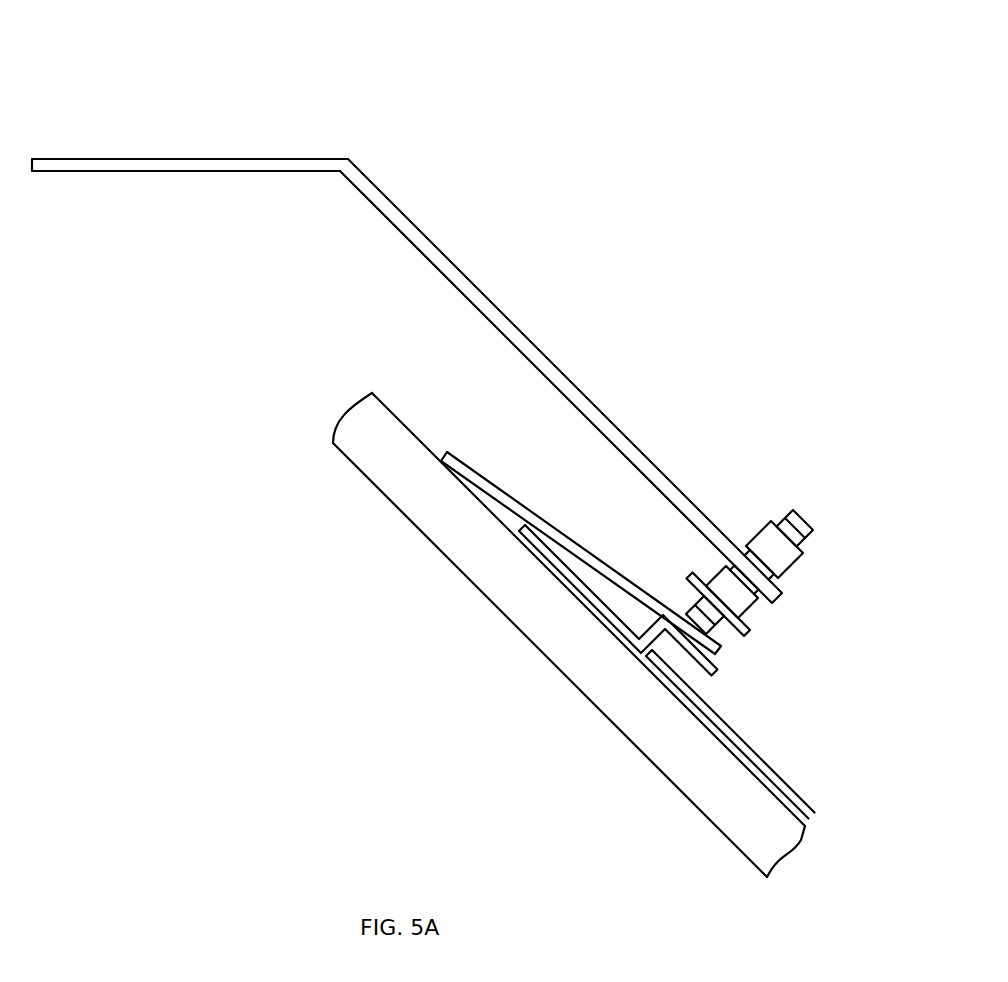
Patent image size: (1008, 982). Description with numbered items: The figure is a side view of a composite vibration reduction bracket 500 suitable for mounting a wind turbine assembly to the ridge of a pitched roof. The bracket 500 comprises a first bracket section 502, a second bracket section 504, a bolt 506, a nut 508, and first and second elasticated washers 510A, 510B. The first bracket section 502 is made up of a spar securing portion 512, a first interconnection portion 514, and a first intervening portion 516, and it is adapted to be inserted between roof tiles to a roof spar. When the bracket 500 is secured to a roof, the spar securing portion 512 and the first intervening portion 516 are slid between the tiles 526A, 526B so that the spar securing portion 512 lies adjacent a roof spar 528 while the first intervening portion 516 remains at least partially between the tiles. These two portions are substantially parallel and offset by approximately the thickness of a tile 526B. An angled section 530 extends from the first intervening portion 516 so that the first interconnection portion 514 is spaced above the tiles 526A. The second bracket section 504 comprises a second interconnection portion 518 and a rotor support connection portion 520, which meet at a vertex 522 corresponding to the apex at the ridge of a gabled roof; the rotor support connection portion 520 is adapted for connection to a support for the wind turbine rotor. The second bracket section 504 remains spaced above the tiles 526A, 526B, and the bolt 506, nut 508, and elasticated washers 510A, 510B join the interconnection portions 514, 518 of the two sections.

The composite vibration reduction bracket 500 is at (580, 86).
The first bracket section 502 is at (752, 704).
The second bracket section 504 is at (521, 211).
The bolt 506 is at (727, 630).
The nut 508 is at (794, 521).
The first elasticated washer 510A is at (757, 603).
The second elasticated washer 510B is at (760, 528).
The spar securing portion 512 is at (590, 590).
The first interconnection portion 514 is at (687, 578).
The first intervening portion 516 is at (688, 650).
The second interconnection portion 518 is at (545, 354).
The rotor support connection portion 520 is at (162, 158).
The vertex 522 is at (350, 160).
The tile 526A is at (478, 441).
The tile 526B is at (760, 770).
The roof spar 528 is at (668, 757).
The angled section 530 is at (745, 660).